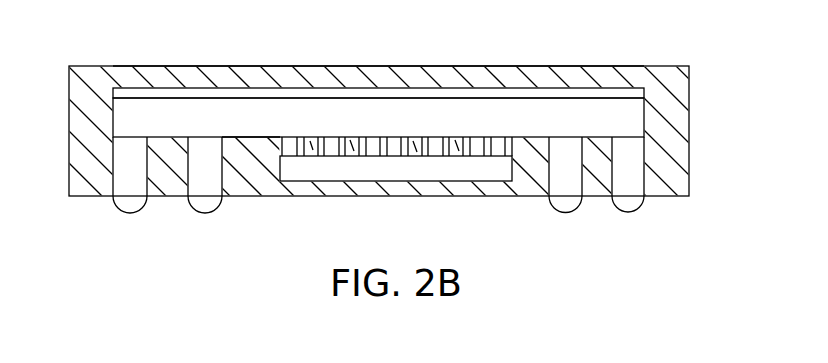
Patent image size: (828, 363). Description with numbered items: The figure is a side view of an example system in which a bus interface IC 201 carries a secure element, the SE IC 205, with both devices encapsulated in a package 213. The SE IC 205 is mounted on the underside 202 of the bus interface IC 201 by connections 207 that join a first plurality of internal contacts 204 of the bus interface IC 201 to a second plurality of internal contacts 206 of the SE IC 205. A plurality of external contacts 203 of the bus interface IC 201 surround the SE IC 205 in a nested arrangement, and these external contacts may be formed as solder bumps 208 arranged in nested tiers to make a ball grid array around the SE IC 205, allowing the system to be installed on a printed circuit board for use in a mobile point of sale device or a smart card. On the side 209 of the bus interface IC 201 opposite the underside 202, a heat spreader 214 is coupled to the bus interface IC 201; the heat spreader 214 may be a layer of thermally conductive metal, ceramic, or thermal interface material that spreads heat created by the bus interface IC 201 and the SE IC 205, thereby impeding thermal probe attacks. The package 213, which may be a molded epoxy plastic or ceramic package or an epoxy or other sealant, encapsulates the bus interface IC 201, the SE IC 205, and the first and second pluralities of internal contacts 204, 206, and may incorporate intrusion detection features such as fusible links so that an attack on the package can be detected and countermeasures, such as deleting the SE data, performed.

The bus interface IC 201 is at (436, 130).
The underside 202 is at (247, 144).
The external contacts 203 is at (146, 153).
The first plurality of internal contacts 204 is at (289, 131).
The SE IC 205 is at (342, 181).
The second plurality of internal contacts 206 is at (417, 163).
The connections 207 is at (508, 148).
The solder bumps 208 is at (137, 211).
The side 209 is at (249, 90).
The package 213 is at (407, 66).
The heat spreader 214 is at (462, 83).